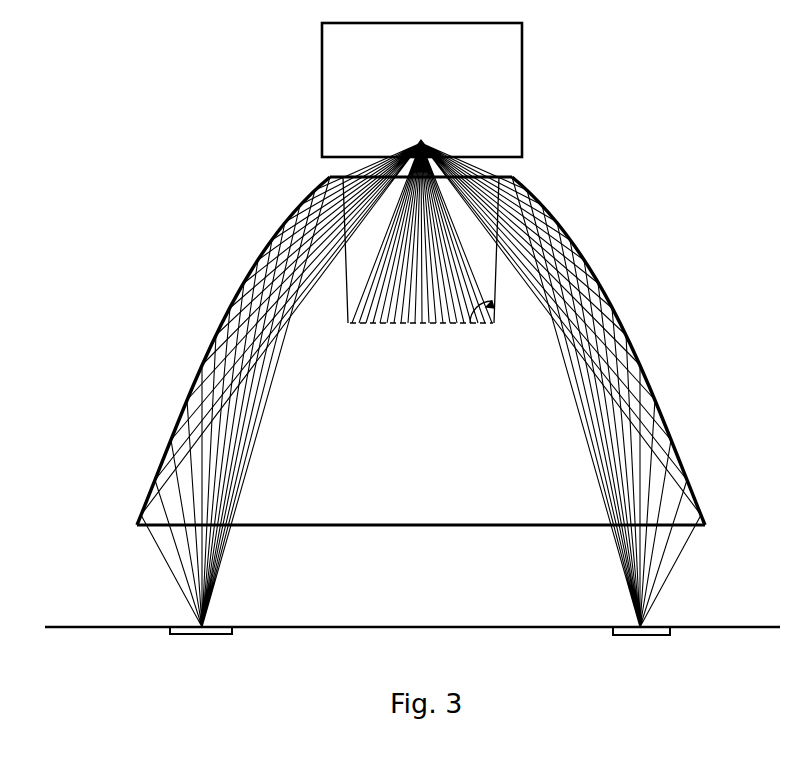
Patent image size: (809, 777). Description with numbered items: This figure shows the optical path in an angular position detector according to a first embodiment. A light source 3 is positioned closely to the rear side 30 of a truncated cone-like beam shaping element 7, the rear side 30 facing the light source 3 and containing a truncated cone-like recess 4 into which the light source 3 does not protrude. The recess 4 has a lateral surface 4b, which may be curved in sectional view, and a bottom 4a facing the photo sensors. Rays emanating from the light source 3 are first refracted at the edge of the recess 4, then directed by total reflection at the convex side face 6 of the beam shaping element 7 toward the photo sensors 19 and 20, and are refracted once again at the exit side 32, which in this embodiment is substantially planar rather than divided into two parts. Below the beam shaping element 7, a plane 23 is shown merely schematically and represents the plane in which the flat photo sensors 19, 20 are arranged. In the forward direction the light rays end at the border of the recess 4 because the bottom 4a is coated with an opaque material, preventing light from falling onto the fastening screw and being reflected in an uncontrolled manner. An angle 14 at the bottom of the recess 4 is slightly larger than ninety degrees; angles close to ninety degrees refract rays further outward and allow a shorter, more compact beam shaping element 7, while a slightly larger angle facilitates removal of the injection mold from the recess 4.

The light source 3 is at (525, 113).
The rear side 30 is at (487, 175).
The recess 4 is at (537, 203).
The bottom of recess 4a is at (367, 327).
The lateral surface of recess 4b is at (562, 232).
The side face 6 is at (660, 398).
The beam shaping element 7 is at (623, 307).
The angle 14 is at (478, 326).
The exit side 32 is at (390, 527).
The photo sensor 19 is at (202, 636).
The photo sensor 20 is at (640, 636).
The plane 23 is at (690, 633).